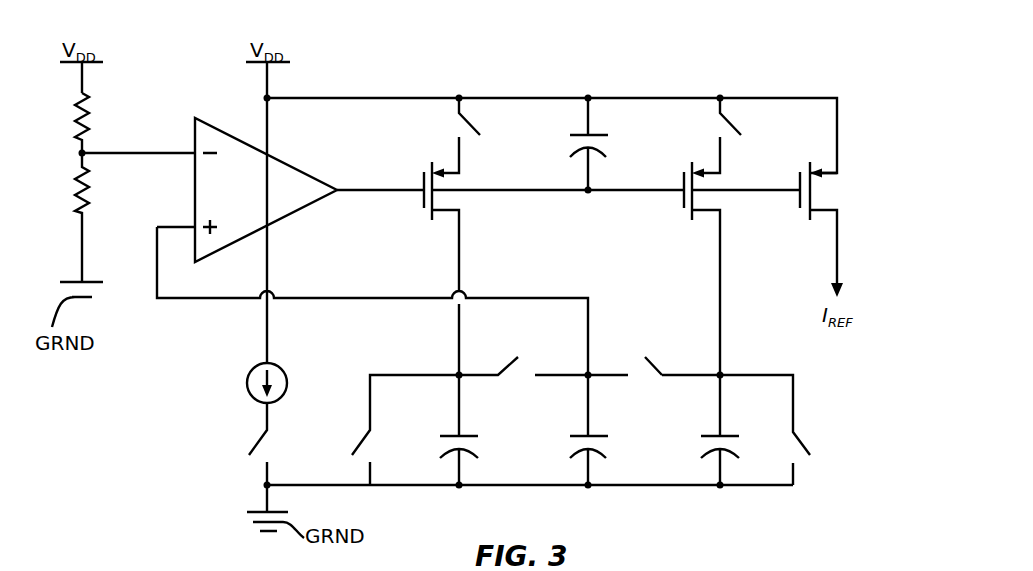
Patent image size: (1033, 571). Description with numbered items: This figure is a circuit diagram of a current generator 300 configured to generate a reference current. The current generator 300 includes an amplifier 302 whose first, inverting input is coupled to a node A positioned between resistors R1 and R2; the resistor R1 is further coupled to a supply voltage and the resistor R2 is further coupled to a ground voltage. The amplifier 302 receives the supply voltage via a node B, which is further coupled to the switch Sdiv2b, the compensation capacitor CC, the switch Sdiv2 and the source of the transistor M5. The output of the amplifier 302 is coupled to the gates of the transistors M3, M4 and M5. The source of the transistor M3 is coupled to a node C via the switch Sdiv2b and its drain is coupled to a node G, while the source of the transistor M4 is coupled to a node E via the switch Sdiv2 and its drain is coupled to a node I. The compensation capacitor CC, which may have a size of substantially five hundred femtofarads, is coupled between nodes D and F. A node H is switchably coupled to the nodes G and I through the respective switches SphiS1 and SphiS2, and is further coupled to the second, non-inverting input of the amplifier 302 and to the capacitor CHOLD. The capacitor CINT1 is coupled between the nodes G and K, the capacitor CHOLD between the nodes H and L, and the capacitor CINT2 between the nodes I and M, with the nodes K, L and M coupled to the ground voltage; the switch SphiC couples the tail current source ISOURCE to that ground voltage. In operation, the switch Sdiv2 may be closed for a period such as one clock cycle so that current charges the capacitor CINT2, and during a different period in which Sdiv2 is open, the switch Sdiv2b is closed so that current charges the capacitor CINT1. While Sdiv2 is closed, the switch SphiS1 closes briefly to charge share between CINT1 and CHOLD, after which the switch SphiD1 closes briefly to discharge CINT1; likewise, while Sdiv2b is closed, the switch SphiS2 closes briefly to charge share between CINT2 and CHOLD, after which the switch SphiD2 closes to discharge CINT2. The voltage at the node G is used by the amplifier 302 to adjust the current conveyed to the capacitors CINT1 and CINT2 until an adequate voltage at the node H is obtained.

The current generator 300 is at (790, 66).
The amplifier 302 is at (297, 213).
The node A is at (86, 150).
The node B is at (262, 97).
The node C is at (460, 95).
The node D is at (590, 95).
The node E is at (721, 95).
The node F is at (590, 193).
The node G is at (458, 373).
The node H is at (585, 378).
The node I is at (722, 373).
The node K is at (461, 488).
The node L is at (590, 488).
The node M is at (722, 488).
The resistor R1 is at (73, 107).
The resistor R2 is at (66, 217).
The transistor M3 is at (510, 268).
The transistor M4 is at (722, 268).
The transistor M5 is at (780, 229).
The compensation capacitor CC is at (573, 144).
The capacitor CINT1 is at (476, 430).
The capacitor CHOLD is at (609, 430).
The capacitor CINT2 is at (737, 430).
The tail current source ISOURCE is at (230, 385).
The switch Sdiv2b is at (430, 135).
The switch Sdiv2 is at (699, 135).
The switch SphiC is at (283, 444).
The switch SphiD1 is at (405, 430).
The switch SphiD2 is at (789, 430).
The switch SphiS1 is at (523, 351).
The switch SphiS2 is at (654, 351).